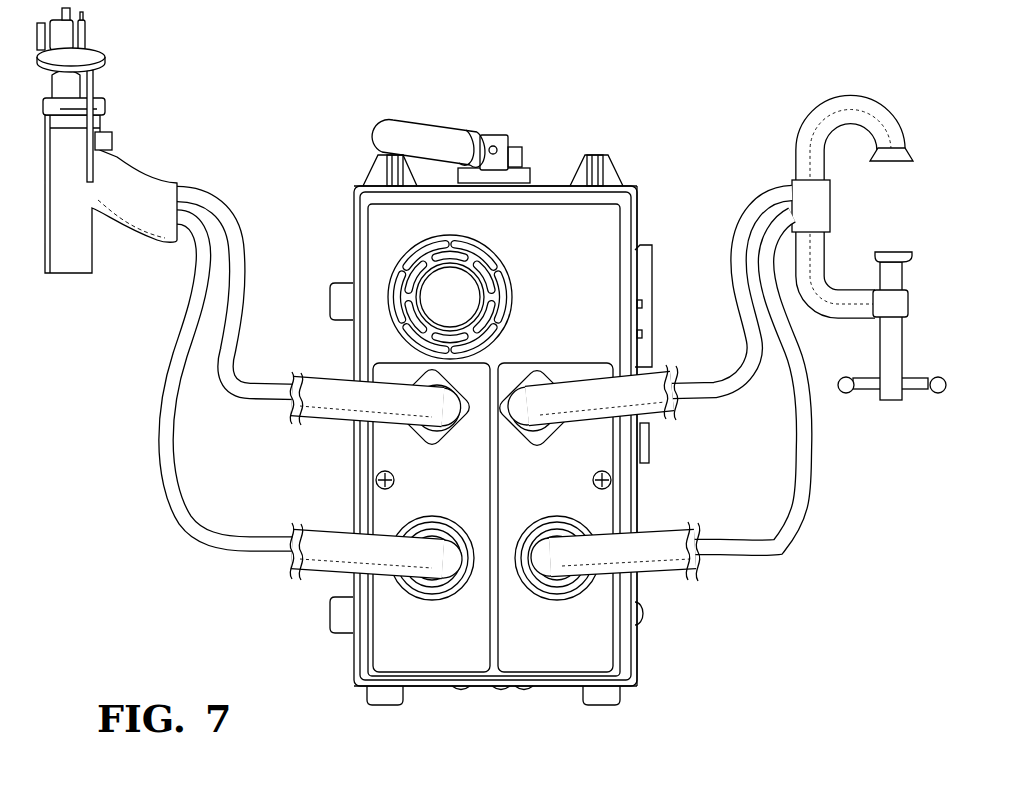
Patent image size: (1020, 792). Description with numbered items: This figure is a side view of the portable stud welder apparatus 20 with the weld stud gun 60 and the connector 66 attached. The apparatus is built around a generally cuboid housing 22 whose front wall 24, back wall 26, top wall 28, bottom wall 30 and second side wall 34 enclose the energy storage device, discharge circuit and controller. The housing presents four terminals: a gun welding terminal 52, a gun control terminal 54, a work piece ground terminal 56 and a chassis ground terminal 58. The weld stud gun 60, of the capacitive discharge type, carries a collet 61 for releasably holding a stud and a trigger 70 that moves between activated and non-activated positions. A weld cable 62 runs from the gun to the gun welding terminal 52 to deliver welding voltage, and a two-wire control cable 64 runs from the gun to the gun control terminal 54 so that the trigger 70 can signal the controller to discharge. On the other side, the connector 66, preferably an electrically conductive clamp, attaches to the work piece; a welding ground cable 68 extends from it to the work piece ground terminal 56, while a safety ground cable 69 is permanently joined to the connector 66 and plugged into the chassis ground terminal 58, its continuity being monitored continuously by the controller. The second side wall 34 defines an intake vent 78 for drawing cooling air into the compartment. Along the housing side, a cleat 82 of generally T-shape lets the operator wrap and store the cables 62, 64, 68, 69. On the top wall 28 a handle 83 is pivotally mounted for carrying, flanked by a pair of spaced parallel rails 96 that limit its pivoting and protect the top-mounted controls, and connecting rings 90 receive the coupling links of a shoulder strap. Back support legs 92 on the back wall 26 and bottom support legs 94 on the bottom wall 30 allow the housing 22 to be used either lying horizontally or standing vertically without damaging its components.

The portable stud welder apparatus 20 is at (703, 186).
The housing 22 is at (345, 232).
The front wall 24 is at (640, 503).
The back wall 26 is at (347, 580).
The top wall 28 is at (545, 186).
The bottom wall 30 is at (567, 690).
The second side wall 34 is at (580, 257).
The gun welding terminal 52 is at (452, 590).
The gun control terminal 54 is at (410, 420).
The work piece ground terminal 56 is at (583, 593).
The chassis ground terminal 58 is at (545, 372).
The weld stud gun 60 is at (120, 140).
The collet 61 is at (72, 37).
The weld cable 62 is at (182, 318).
The two-wire control cable 64 is at (224, 400).
The connector 66 is at (848, 110).
The welding ground cable 68 is at (805, 495).
The safety ground cable 69 is at (748, 398).
The trigger 70 is at (105, 135).
The intake vent 78 is at (400, 290).
The cleat 82 is at (648, 330).
The handle 83 is at (415, 128).
The connecting rings 90 is at (518, 150).
The back support legs 92 is at (345, 300).
The bottom support legs 94 is at (383, 705).
The rails 96 is at (375, 178).